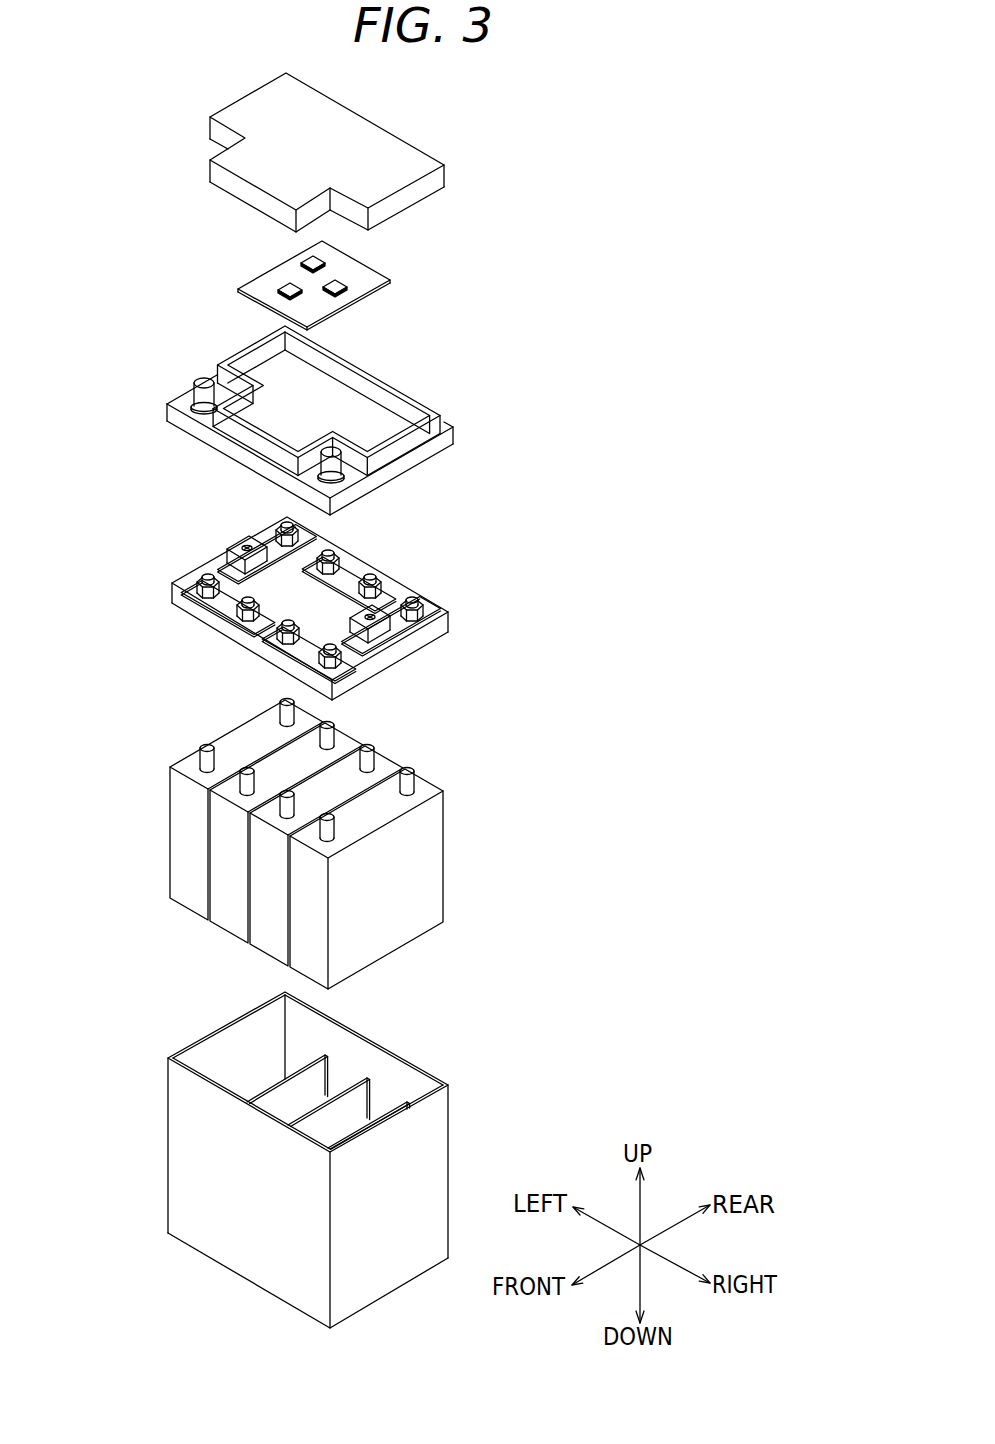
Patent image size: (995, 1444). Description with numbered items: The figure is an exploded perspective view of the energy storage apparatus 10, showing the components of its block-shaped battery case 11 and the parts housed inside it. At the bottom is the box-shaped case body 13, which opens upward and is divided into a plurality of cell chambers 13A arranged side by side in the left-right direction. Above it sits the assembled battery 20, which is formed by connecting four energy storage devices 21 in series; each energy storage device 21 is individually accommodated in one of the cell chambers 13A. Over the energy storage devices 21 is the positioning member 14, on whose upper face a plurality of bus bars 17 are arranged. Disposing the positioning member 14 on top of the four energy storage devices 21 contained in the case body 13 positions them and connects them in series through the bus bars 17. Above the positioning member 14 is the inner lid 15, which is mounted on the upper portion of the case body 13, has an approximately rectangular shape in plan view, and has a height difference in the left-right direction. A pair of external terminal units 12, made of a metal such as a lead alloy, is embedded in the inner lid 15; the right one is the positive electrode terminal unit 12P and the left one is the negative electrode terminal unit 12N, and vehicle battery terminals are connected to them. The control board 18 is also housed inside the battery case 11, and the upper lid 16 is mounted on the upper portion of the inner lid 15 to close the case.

The energy storage apparatus 10 is at (83, 1317).
The battery case 11 is at (347, 700).
The external terminal units 12 is at (295, 368).
The negative electrode terminal unit 12N is at (203, 378).
The positive electrode terminal unit 12P is at (331, 447).
The case body 13 is at (328, 1160).
The cell chambers 13A is at (315, 1123).
The positioning member 14 is at (402, 653).
The inner lid 15 is at (432, 450).
The upper lid 16 is at (380, 140).
The bus bars 17 is at (223, 595).
The control board 18 is at (350, 277).
The assembled battery 20 is at (374, 844).
The energy storage devices 21 is at (190, 837).